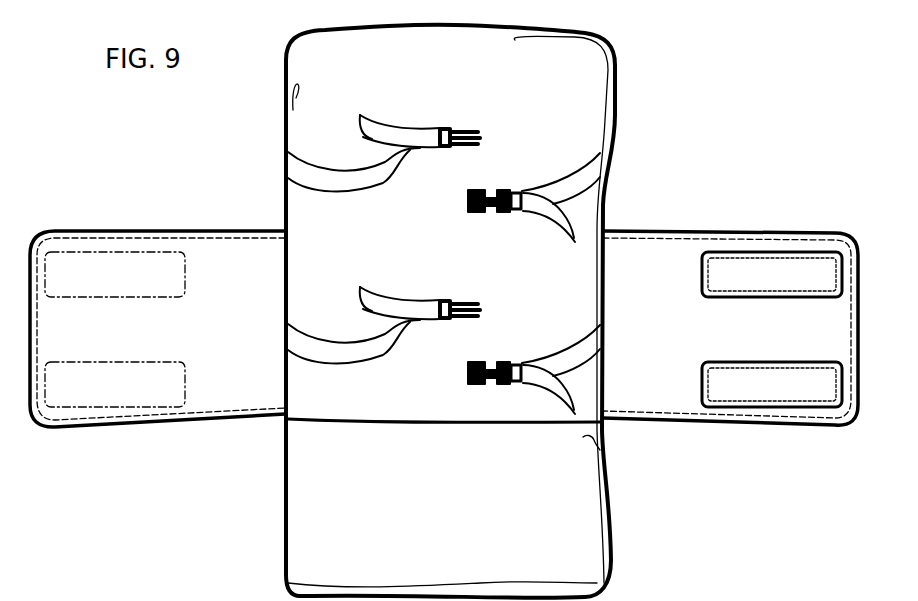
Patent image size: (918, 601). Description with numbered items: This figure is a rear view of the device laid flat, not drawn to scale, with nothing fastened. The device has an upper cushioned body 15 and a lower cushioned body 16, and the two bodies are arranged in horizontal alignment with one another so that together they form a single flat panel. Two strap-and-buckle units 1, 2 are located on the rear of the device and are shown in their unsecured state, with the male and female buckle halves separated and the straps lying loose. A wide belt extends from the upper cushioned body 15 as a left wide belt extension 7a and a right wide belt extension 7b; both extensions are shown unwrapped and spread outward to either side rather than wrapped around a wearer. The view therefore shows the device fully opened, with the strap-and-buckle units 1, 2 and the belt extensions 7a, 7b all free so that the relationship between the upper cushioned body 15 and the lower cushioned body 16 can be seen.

The strap-and-buckle unit 1 is at (580, 187).
The strap-and-buckle unit 2 is at (578, 358).
The wide belt extension 7a is at (207, 267).
The wide belt extension 7b is at (660, 267).
The upper cushioned body 15 is at (520, 134).
The lower cushioned body 16 is at (520, 528).